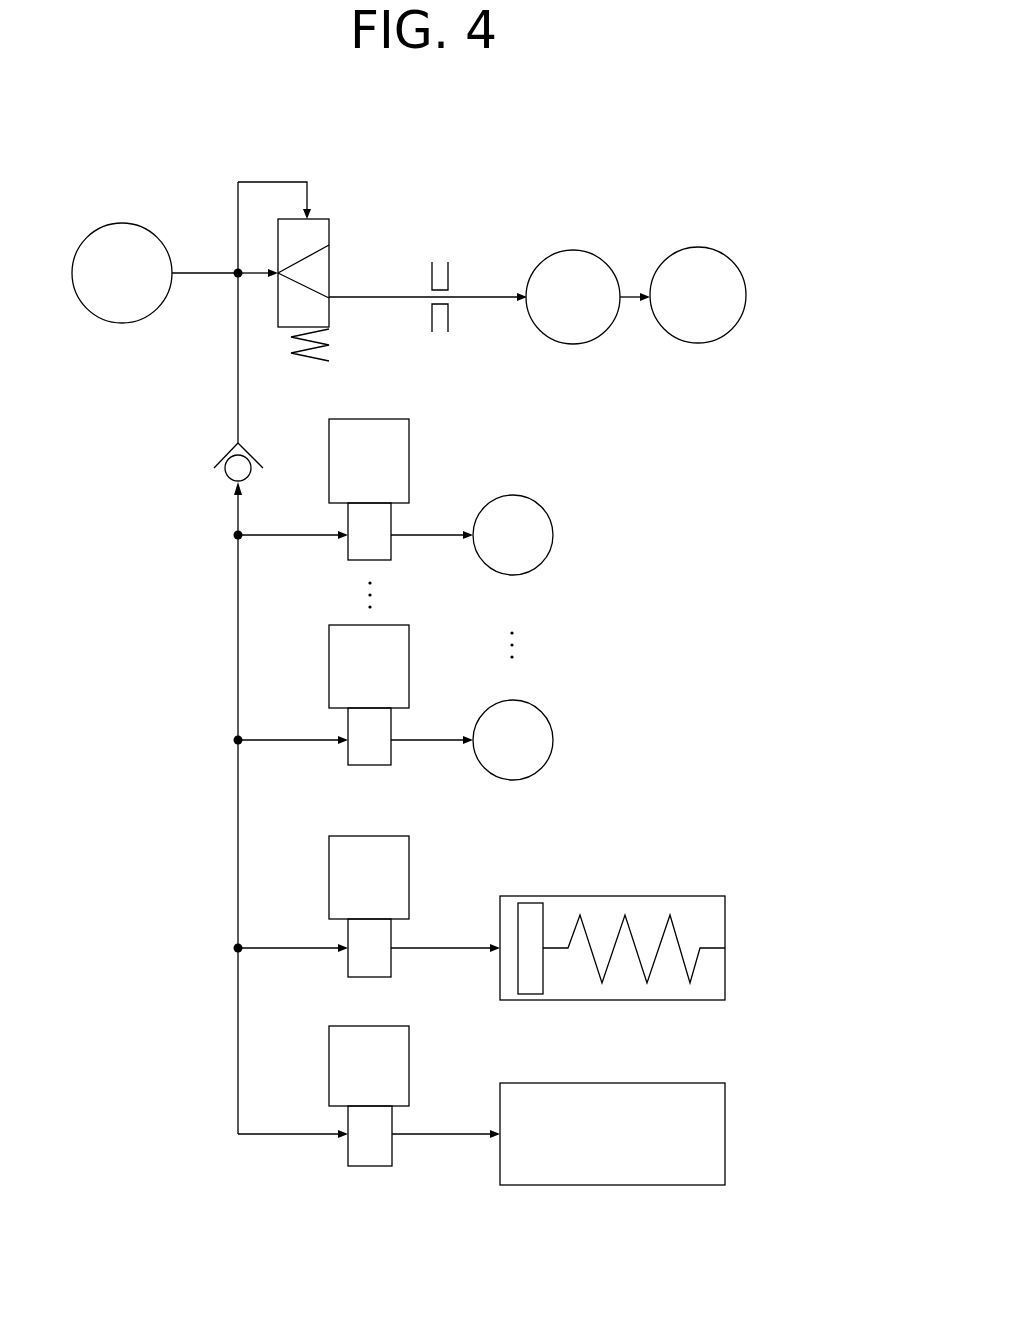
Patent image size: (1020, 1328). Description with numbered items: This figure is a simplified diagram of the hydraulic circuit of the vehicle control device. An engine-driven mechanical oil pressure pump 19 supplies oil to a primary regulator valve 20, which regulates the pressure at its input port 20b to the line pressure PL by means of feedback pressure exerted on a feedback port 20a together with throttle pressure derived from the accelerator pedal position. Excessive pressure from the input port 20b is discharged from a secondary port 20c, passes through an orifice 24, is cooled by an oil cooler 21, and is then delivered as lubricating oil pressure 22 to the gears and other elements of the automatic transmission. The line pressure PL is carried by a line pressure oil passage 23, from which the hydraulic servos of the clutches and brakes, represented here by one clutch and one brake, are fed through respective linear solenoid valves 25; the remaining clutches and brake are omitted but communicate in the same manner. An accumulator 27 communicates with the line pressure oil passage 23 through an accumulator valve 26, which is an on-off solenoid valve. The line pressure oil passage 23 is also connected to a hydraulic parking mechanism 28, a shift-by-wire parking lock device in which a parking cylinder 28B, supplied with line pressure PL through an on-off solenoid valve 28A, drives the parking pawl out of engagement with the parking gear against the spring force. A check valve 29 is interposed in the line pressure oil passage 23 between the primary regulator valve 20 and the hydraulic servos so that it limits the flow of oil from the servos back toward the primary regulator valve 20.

The mechanical oil pressure pump 19 is at (108, 228).
The primary regulator valve 20 is at (330, 232).
The feedback port 20a is at (312, 212).
The input port 20b is at (272, 270).
The secondary port 20c is at (331, 297).
The oil cooler 21 is at (573, 251).
The lubricating oil pressure 22 is at (705, 250).
The line pressure oil passage 23 is at (238, 352).
The orifice 24 is at (433, 262).
The linear solenoid valves 25 is at (410, 448).
The accumulator valve 26 is at (410, 862).
The accumulator 27 is at (690, 896).
The parking mechanism 28 is at (529, 1138).
The on-off solenoid valve 28A is at (410, 1073).
The parking cylinder 28B is at (715, 1083).
The check valve 29 is at (227, 447).